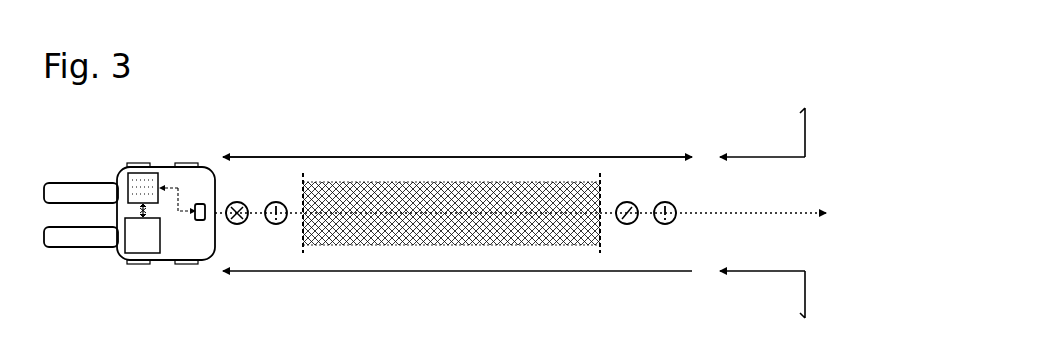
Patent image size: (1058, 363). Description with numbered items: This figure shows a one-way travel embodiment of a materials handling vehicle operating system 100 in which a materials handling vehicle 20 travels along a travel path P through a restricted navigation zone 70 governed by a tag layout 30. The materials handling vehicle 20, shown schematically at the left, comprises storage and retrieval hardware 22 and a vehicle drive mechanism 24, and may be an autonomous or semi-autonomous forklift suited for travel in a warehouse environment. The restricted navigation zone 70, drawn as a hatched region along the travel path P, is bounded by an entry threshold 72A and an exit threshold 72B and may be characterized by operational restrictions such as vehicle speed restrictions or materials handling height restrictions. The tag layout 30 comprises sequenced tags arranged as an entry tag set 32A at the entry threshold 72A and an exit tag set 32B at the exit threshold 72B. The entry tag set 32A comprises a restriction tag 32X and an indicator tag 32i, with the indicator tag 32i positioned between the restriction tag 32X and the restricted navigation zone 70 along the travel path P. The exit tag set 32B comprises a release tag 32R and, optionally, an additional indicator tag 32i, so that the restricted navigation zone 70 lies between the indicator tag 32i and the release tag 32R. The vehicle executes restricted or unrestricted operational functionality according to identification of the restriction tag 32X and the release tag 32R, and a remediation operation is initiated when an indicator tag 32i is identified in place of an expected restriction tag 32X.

The tag layout 30 is at (245, 85).
The materials handling vehicle operating system 100 is at (489, 110).
The travel path P is at (724, 212).
The materials handling vehicle 20 is at (163, 167).
The storage and retrieval hardware 22 is at (77, 247).
The vehicle drive mechanism 24 is at (133, 264).
The entry tag set 32A is at (287, 198).
The restriction tag 32X is at (237, 224).
The indicator tag 32i is at (276, 224).
The exit tag set 32B is at (678, 200).
The release tag 32R is at (627, 224).
The restricted navigation zone 70 is at (428, 246).
The entry threshold 72A is at (302, 176).
The exit threshold 72B is at (599, 176).